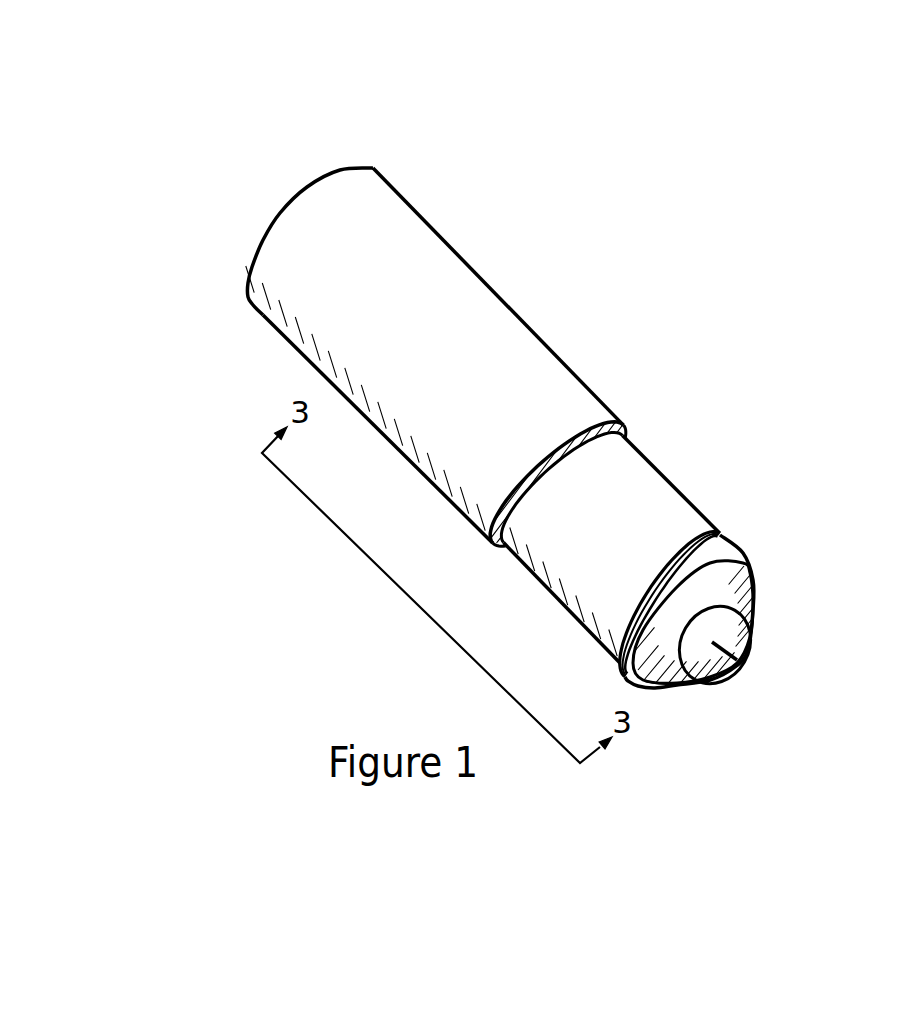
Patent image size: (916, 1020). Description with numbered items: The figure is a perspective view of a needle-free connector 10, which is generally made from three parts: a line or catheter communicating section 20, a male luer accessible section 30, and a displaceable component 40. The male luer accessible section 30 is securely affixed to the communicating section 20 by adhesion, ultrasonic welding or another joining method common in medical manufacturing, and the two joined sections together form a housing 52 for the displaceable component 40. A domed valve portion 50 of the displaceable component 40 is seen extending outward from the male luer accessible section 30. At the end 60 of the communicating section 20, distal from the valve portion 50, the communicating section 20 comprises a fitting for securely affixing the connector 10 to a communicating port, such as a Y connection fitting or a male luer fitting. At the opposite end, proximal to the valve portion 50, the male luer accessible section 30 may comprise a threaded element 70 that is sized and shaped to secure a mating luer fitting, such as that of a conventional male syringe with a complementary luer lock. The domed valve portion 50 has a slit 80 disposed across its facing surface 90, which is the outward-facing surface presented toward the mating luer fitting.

The needle-free connector 10 is at (655, 289).
The line or catheter communicating section 20 is at (521, 300).
The male luer accessible section 30 is at (702, 507).
The displaceable component 40 is at (750, 632).
The domed valve portion 50 is at (688, 682).
The housing 52 is at (605, 394).
The end 60 is at (248, 268).
The threaded element 70 is at (728, 537).
The slit 80 is at (735, 657).
The facing surface 90 is at (741, 655).